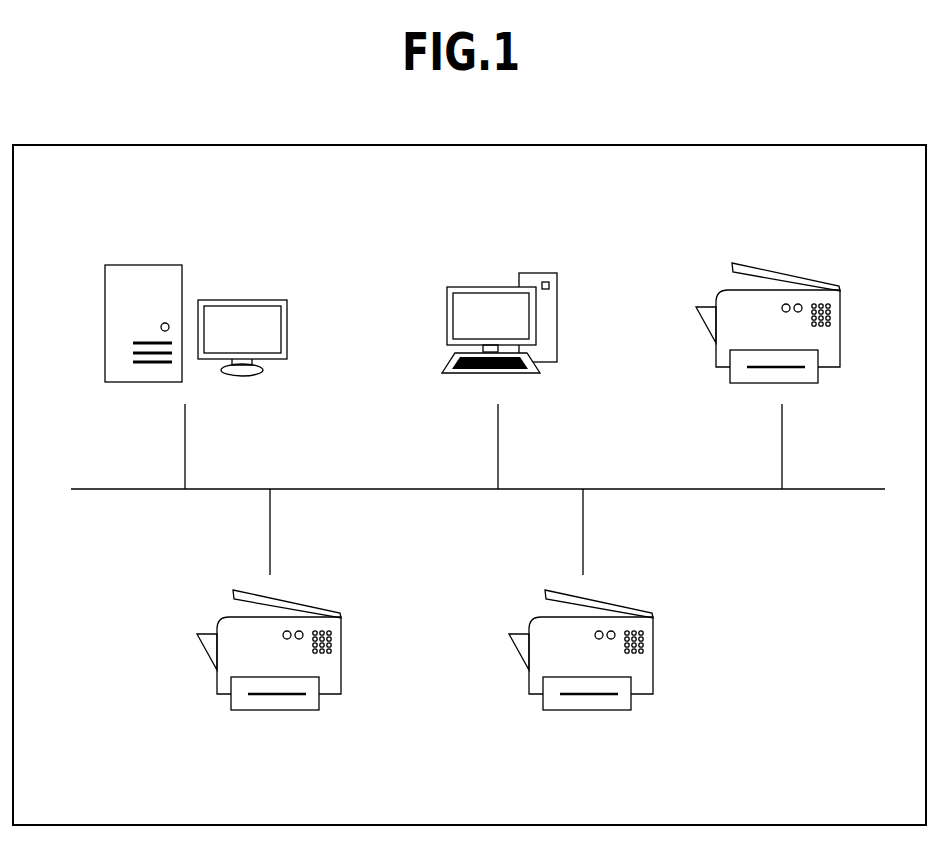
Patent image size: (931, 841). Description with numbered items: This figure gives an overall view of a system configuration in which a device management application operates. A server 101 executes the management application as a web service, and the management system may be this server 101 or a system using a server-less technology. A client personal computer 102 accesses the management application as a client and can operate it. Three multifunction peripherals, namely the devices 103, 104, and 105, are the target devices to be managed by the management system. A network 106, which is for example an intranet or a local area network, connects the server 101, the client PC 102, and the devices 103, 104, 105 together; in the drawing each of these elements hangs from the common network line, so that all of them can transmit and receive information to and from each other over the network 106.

The server 101 is at (146, 265).
The client personal computer 102 is at (487, 287).
The device 103 is at (275, 712).
The device 104 is at (588, 712).
The device 105 is at (776, 275).
The network 106 is at (118, 492).